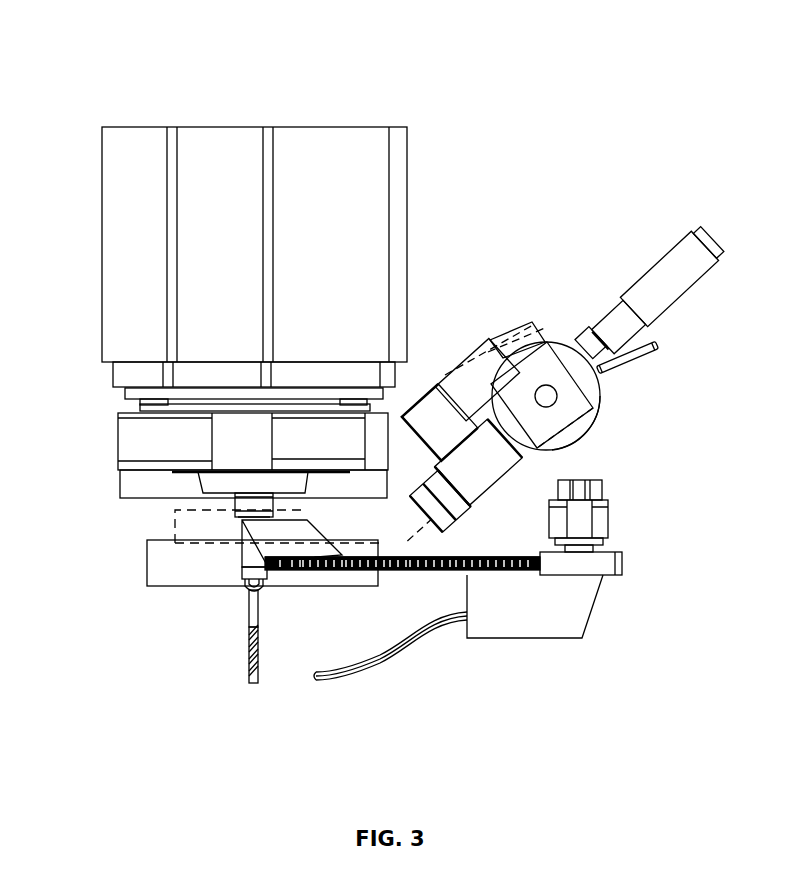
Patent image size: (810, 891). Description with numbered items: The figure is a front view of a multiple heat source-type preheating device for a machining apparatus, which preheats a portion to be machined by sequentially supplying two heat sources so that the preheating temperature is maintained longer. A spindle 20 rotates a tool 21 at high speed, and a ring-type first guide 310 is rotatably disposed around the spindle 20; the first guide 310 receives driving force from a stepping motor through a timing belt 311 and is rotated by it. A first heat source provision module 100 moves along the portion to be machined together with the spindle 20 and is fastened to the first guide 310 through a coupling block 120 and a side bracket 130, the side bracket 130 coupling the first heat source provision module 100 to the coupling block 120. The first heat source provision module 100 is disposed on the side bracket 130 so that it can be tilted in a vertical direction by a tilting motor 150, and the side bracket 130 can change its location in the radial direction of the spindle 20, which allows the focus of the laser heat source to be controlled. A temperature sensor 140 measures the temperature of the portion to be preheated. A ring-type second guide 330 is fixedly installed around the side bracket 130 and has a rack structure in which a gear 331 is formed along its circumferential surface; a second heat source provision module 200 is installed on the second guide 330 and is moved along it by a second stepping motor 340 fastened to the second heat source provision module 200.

The spindle 20 is at (246, 122).
The tool 21 is at (250, 656).
The first heat source provision module 100 is at (706, 226).
The coupling block 120 is at (128, 448).
The side bracket 130 is at (552, 452).
The temperature sensor 140 is at (472, 345).
The tilting motor 150 is at (562, 338).
The second heat source provision module 200 is at (338, 690).
The first guide 310 is at (168, 404).
The timing belt 311 is at (125, 390).
The second guide 330 is at (403, 572).
The gear 331 is at (441, 572).
The second stepping motor 340 is at (601, 519).